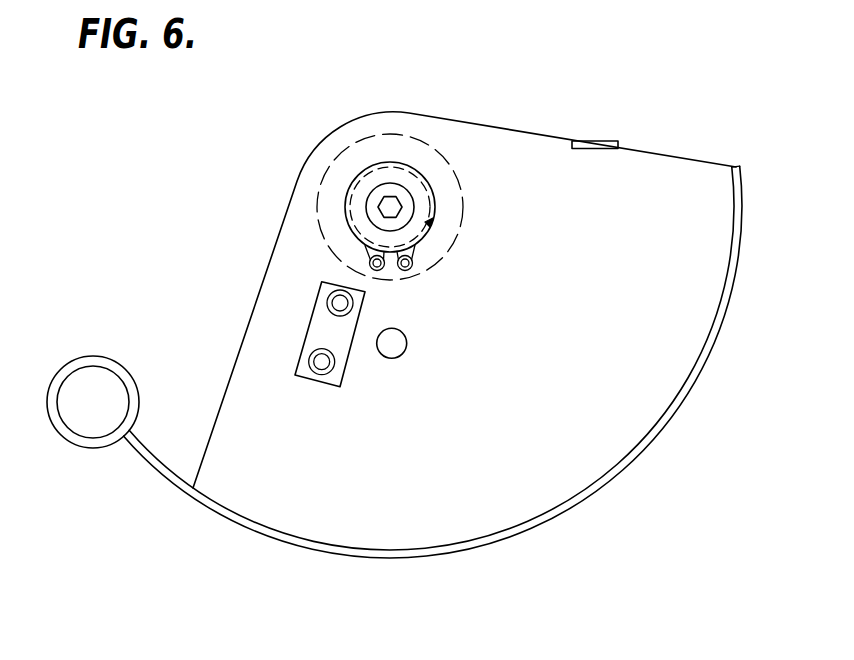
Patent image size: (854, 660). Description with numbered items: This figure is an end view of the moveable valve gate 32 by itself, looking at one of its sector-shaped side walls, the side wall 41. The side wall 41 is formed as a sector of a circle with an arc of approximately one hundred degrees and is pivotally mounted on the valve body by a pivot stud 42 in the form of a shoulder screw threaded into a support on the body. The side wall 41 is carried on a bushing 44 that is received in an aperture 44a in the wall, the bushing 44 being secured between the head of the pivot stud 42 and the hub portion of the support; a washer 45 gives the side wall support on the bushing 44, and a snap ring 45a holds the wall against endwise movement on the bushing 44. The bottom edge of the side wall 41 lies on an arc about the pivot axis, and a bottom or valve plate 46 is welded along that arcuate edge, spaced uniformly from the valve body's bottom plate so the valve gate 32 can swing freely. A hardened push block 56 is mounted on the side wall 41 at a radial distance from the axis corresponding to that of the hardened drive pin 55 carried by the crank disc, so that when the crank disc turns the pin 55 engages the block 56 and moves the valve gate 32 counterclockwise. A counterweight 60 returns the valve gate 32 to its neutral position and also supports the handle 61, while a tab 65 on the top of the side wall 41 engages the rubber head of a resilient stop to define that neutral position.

The moveable valve gate 32 is at (257, 270).
The side wall 41 is at (518, 349).
The pivot stud 42 is at (403, 203).
The bushing 44 is at (410, 178).
The aperture 44a is at (428, 223).
The washer 45 is at (403, 146).
The snap ring 45a is at (378, 280).
The bottom or valve plate 46 is at (224, 521).
The drive pin 55 is at (402, 342).
The push block 56 is at (317, 330).
The counterweight 60 is at (137, 379).
The handle 61 is at (97, 383).
The tab 65 is at (613, 141).